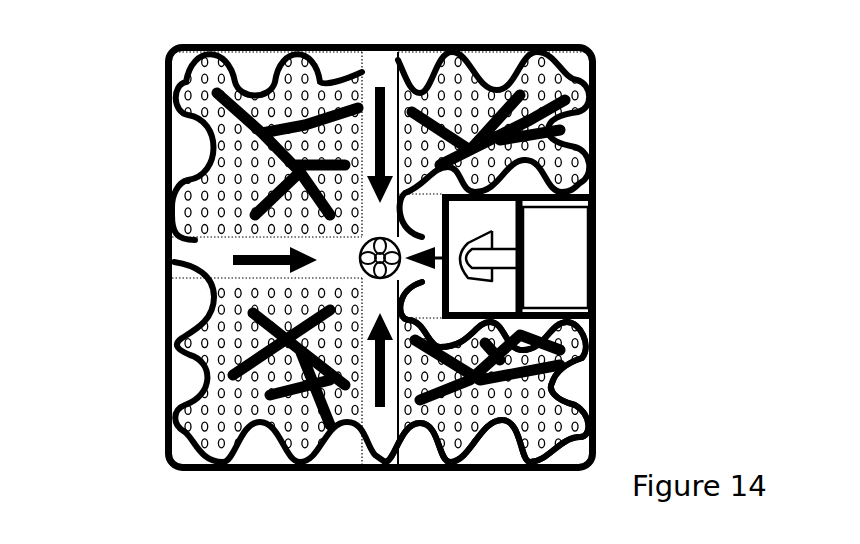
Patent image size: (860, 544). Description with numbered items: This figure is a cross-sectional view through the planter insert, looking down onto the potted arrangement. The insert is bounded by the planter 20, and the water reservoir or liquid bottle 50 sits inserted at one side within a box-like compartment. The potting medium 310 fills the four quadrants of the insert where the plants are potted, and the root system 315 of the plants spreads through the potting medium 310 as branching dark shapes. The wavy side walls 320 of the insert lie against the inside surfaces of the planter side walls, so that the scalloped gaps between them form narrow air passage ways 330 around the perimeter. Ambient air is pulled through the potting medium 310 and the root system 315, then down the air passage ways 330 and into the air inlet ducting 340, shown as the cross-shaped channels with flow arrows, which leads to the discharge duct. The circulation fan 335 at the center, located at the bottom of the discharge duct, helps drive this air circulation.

The heat exchanger housing 20 is at (632, 121).
The water reservoir/liquid bottle 50 is at (595, 243).
The potting medium 310 is at (185, 87).
The root system 315 is at (215, 153).
The wavy side walls 320 is at (565, 125).
The air passage ways 330 is at (577, 377).
The circulation fan 335 is at (362, 262).
The air inlet ducting 340 is at (212, 260).